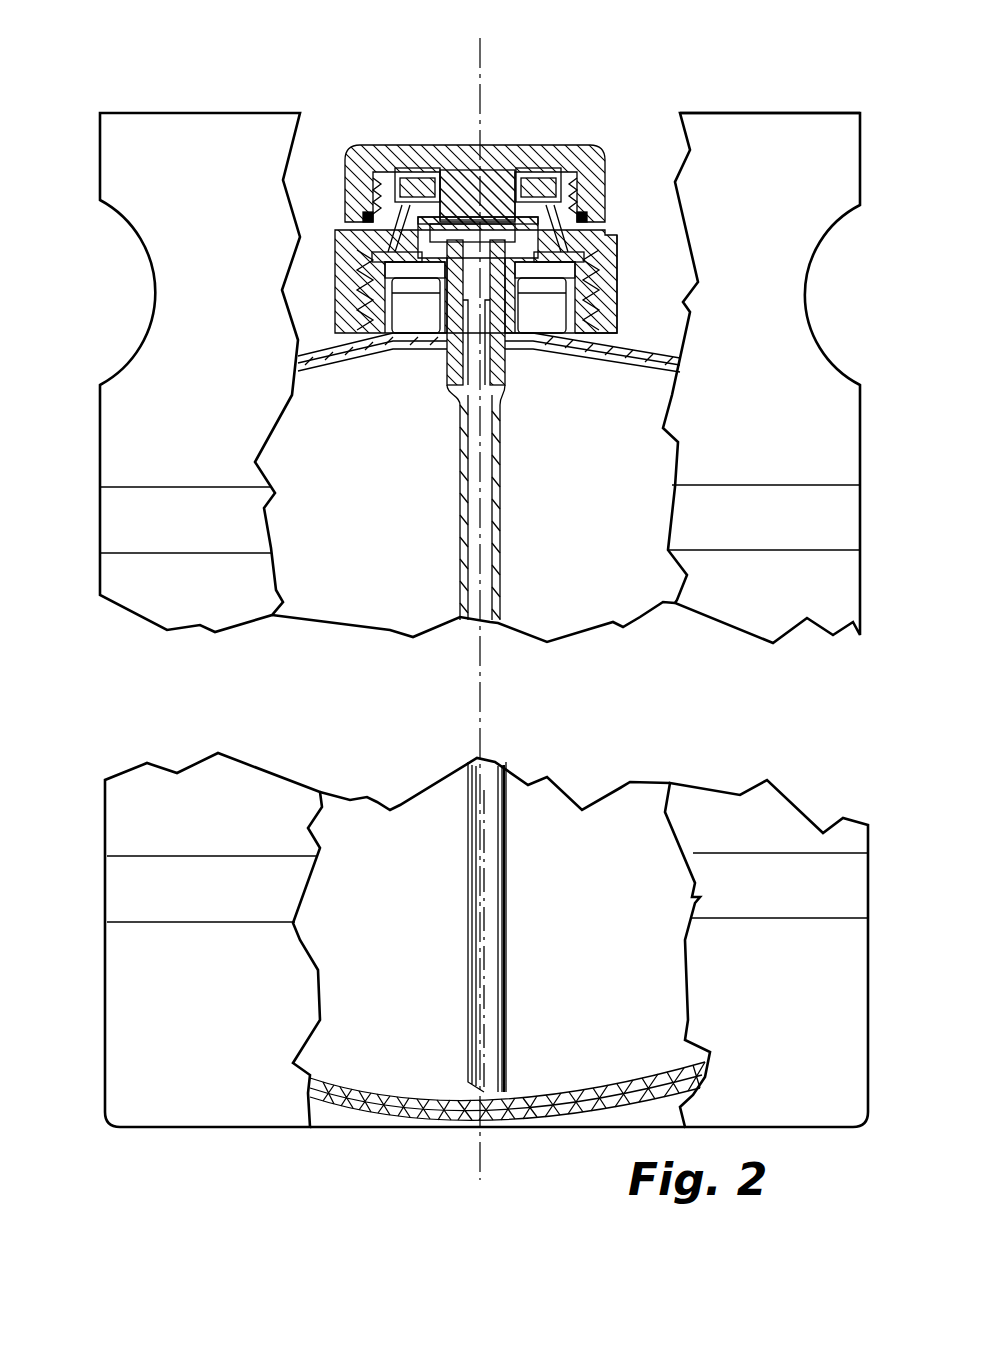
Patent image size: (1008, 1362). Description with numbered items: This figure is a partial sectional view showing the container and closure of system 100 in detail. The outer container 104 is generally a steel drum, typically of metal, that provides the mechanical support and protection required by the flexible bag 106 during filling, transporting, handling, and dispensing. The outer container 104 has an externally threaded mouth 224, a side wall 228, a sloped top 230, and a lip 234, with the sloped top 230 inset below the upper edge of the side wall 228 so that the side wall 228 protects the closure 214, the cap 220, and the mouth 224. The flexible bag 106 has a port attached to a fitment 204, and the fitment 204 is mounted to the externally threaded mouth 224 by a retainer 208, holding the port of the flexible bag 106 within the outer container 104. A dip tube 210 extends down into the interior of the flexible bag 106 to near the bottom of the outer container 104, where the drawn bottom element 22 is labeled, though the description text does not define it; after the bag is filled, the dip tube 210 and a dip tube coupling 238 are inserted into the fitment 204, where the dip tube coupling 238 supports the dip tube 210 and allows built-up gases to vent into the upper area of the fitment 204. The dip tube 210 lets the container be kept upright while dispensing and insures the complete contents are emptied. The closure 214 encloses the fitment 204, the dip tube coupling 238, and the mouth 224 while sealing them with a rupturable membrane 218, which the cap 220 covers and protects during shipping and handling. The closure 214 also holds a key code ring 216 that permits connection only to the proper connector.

The system 100 is at (193, 92).
The cap 220 is at (450, 145).
The rupturable membrane 218 is at (485, 195).
The key code ring 216 is at (515, 190).
The lip 234 is at (700, 118).
The closure 214 is at (610, 235).
The externally threaded mouth 224 is at (622, 290).
The dip tube coupling 238 is at (385, 295).
The retainer 208 is at (390, 300).
The sloped top 230 is at (308, 362).
The fitment 204 is at (430, 360).
The flexible bag 106 is at (628, 375).
The side wall 228 is at (100, 508).
The dip tube 210 is at (500, 512).
The outer container 104 is at (135, 986).
The bottom disc 22 is at (228, 1128).